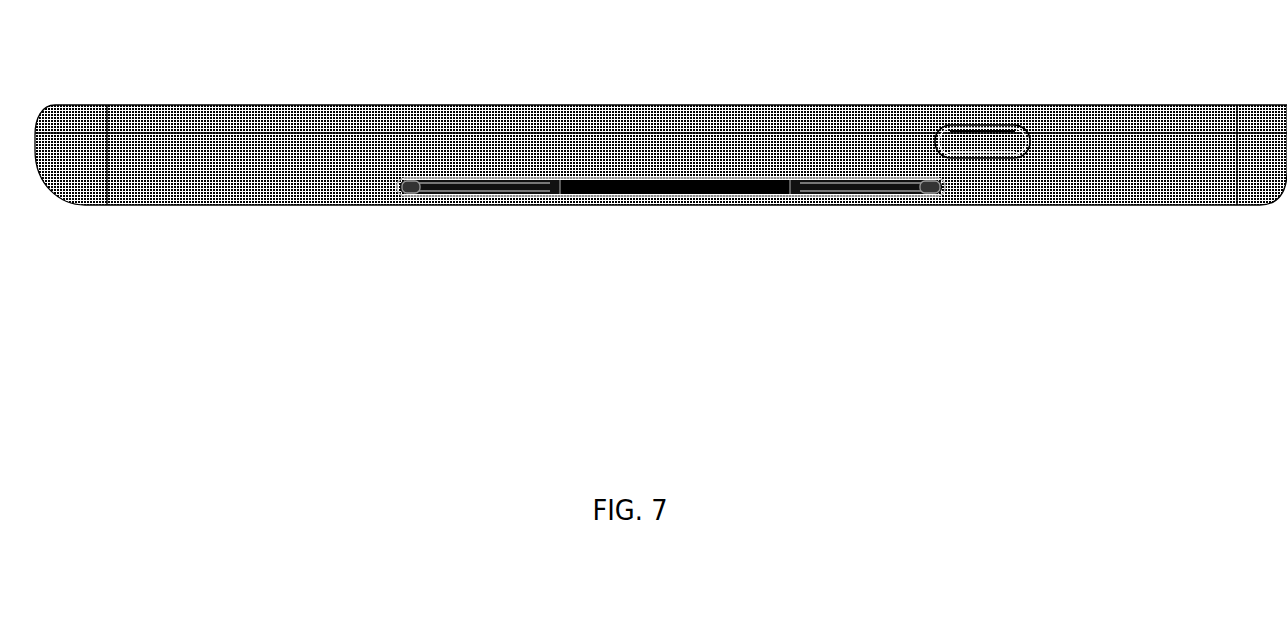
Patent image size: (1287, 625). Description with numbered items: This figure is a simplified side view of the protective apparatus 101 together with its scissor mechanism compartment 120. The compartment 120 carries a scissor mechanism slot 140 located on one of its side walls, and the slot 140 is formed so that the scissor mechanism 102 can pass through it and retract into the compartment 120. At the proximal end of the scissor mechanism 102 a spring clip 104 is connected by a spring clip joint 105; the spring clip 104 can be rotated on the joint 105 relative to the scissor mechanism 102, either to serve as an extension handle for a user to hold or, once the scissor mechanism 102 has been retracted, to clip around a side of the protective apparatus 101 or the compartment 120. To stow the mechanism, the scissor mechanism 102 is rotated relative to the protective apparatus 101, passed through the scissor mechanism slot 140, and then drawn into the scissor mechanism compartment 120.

The protective apparatus 101 is at (1137, 120).
The scissor mechanism 102 is at (420, 182).
The spring clip 104 is at (577, 190).
The spring clip joint 105 is at (683, 190).
The scissor mechanism compartment 120 is at (1073, 190).
The scissor mechanism slot 140 is at (472, 196).